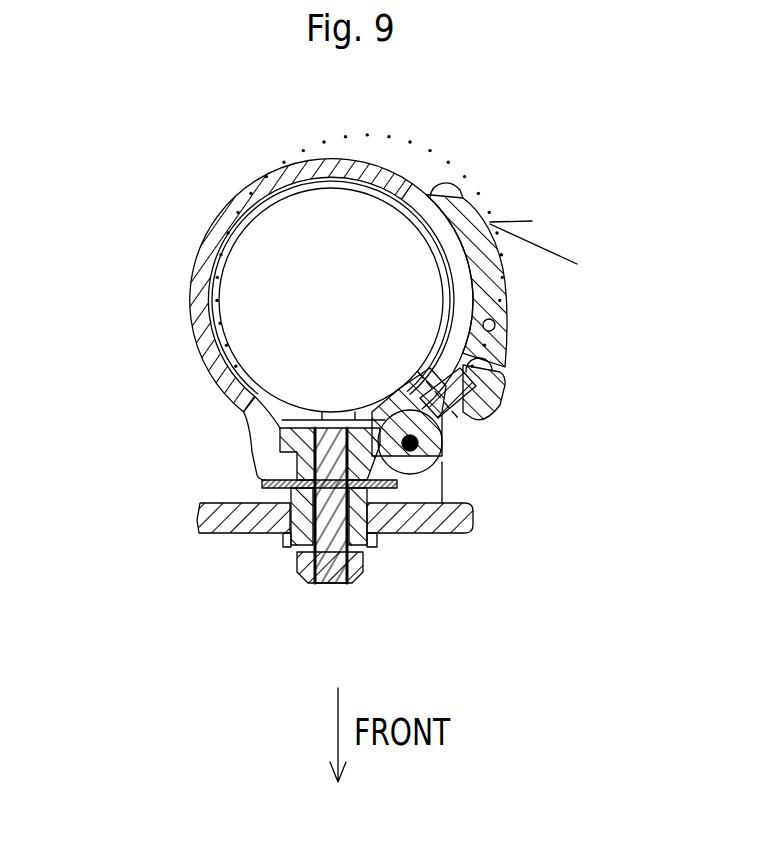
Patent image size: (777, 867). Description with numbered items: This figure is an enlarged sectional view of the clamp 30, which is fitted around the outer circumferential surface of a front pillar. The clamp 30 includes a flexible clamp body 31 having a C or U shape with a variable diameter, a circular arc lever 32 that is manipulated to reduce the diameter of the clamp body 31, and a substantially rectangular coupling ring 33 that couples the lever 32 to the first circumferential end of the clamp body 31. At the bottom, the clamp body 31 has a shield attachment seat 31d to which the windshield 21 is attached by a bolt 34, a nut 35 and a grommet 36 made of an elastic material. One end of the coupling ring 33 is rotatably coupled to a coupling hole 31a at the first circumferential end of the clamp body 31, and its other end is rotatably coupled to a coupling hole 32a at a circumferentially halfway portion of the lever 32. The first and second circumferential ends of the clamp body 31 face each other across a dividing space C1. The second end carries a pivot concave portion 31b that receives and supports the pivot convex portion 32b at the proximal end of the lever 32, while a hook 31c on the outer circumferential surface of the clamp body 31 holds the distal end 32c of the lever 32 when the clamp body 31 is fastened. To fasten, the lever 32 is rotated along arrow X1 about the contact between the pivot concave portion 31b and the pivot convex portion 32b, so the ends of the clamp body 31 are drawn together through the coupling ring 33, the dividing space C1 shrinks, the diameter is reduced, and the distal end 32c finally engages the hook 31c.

The windshield 21 is at (200, 537).
The clamp 30 is at (172, 251).
The clamp body 31 is at (230, 210).
The coupling hole 31a is at (458, 536).
The pivot concave portion 31b is at (436, 384).
The hook 31c is at (430, 181).
The shield attachment seat 31d is at (272, 465).
The lever 32 is at (492, 270).
The coupling hole 32a is at (496, 328).
The pivot convex portion 32b is at (484, 372).
The distal end 32c is at (456, 192).
The coupling ring 33 is at (450, 352).
The bolt 34 is at (312, 583).
The nut 35 is at (258, 450).
The grommet 36 is at (380, 543).
The dividing space C1 is at (447, 432).
The arrow X1 is at (533, 231).